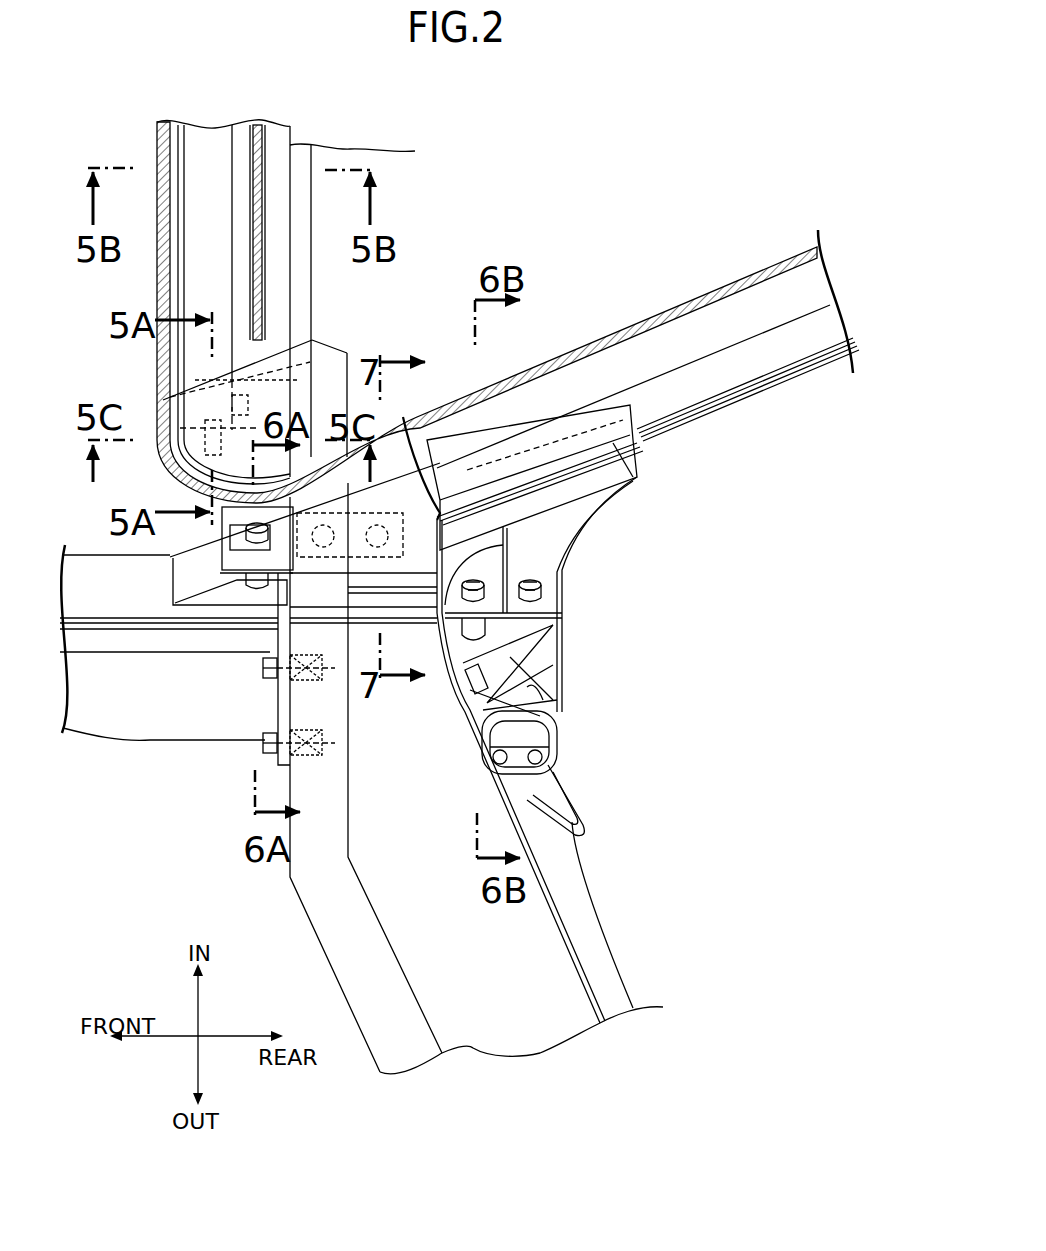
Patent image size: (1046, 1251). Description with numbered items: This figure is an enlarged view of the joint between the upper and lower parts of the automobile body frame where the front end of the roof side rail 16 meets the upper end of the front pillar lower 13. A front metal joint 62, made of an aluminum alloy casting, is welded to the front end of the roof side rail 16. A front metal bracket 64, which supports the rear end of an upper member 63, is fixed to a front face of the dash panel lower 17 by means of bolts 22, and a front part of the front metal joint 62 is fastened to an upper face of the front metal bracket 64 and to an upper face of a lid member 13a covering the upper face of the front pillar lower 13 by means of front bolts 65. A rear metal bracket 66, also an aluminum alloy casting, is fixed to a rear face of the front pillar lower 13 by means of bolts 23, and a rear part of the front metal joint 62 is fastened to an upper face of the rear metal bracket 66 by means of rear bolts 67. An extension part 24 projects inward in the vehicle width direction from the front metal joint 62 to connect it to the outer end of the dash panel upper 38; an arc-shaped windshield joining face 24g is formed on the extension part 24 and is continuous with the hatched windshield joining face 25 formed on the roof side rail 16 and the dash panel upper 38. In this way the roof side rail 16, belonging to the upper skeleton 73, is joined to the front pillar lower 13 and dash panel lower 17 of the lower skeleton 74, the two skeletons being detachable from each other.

The front pillar lower 13 is at (540, 745).
The lid member 13a is at (398, 612).
The roof side rail 16 is at (725, 372).
The dash panel lower 17 is at (333, 932).
The bolts 22 is at (263, 742).
The bolts 23 is at (563, 748).
The extension part 24 is at (260, 311).
The windshield joining face 24g is at (174, 460).
The windshield joining face 25 is at (158, 262).
The dash panel upper 38 is at (205, 118).
The front metal joint 62 is at (514, 476).
The upper member 63 is at (120, 710).
The front metal bracket 64 is at (190, 572).
The front bolts 65 is at (228, 510).
The rear metal bracket 66 is at (543, 652).
The rear bolts 67 is at (528, 588).
The upper skeleton 73 is at (703, 460).
The lower skeleton 74 is at (610, 846).